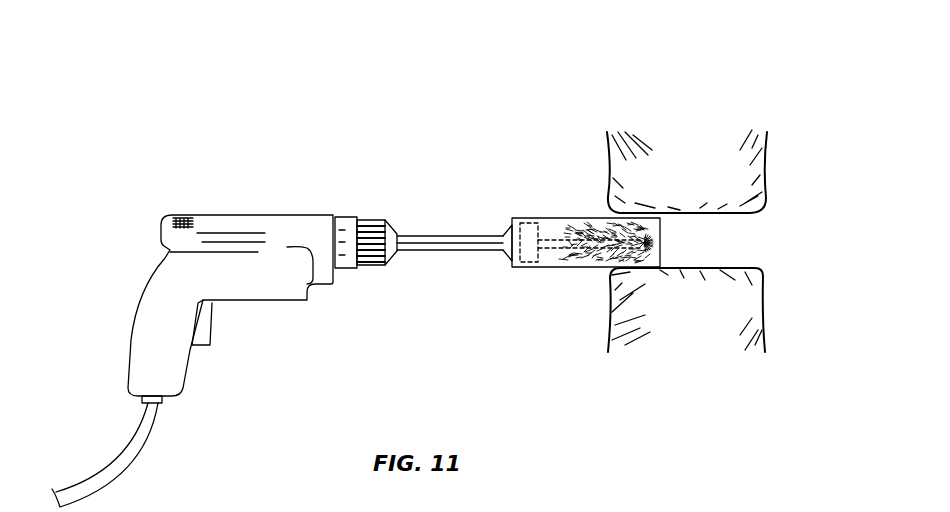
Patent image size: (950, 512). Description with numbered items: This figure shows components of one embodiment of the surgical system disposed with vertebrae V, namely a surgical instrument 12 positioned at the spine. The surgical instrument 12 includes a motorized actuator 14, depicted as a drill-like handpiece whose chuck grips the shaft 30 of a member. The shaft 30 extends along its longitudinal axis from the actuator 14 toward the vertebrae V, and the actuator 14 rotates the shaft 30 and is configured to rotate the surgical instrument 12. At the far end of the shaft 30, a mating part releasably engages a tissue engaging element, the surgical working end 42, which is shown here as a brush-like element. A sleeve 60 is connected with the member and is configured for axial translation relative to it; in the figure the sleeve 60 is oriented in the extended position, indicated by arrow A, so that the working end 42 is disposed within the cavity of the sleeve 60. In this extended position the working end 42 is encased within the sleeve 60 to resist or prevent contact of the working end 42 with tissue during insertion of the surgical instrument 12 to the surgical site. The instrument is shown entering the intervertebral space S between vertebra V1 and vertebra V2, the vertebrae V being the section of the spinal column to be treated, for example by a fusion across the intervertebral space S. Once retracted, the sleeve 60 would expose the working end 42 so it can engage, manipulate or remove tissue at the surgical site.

The motorized actuator 14 is at (234, 78).
The surgical instrument 12 is at (418, 80).
The shaft 30 is at (443, 242).
The surgical working end 42 is at (550, 237).
The sleeve 60 is at (585, 265).
The vertebrae V is at (785, 115).
The vertebra V1 is at (730, 177).
The vertebra V2 is at (730, 293).
The intervertebral space S is at (730, 252).
The arrow A is at (468, 317).